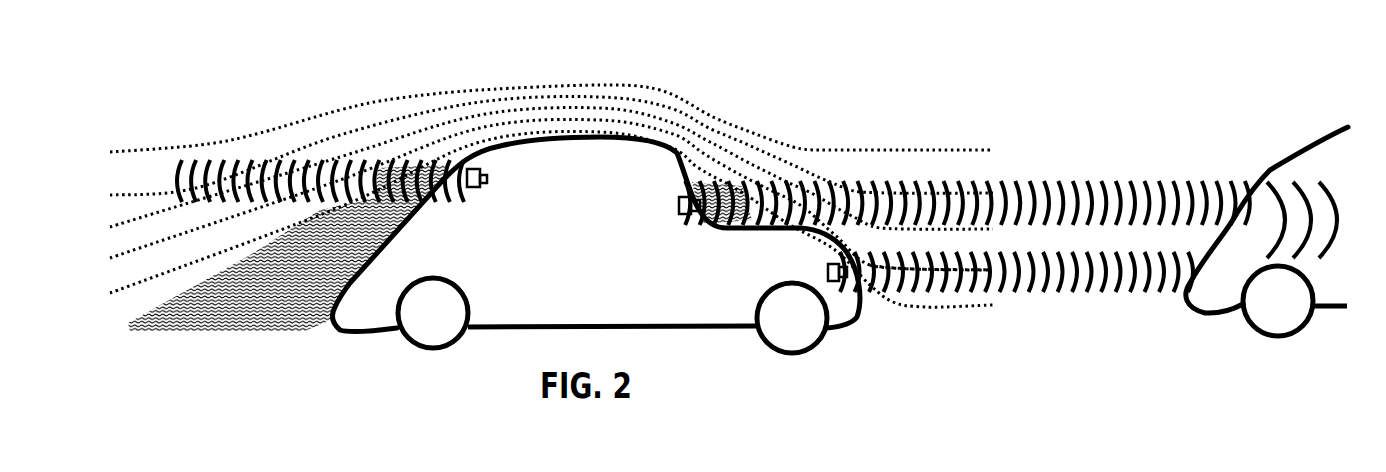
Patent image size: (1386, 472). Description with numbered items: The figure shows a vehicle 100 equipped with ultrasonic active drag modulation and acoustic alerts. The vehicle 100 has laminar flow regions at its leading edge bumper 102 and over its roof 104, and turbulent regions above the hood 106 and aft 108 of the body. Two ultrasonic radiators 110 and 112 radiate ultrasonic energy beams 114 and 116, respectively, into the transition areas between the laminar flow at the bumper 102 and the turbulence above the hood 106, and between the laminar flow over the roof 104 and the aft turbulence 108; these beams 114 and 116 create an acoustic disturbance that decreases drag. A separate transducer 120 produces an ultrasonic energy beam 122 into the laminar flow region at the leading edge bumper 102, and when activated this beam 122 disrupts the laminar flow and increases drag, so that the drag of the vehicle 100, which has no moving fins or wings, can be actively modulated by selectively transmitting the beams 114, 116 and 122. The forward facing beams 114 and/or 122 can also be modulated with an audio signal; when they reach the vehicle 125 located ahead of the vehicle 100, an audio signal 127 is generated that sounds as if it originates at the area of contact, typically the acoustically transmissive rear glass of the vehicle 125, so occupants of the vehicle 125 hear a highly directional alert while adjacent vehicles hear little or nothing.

The vehicle 100 is at (611, 275).
The leading edge bumper 102 is at (845, 263).
The roof 104 is at (691, 162).
The turbulent region above the hood 106 is at (792, 184).
The aft turbulent region 108 is at (333, 213).
The ultrasonic radiator 110 is at (737, 187).
The ultrasonic radiator 112 is at (465, 167).
The ultrasonic energy beam 114 is at (1050, 182).
The ultrasonic energy beam 116 is at (197, 182).
The transducer 120 is at (877, 268).
The ultrasonic energy beam 122 is at (1033, 254).
The vehicle located ahead 125 is at (1364, 171).
The audio signal 127 is at (1290, 192).